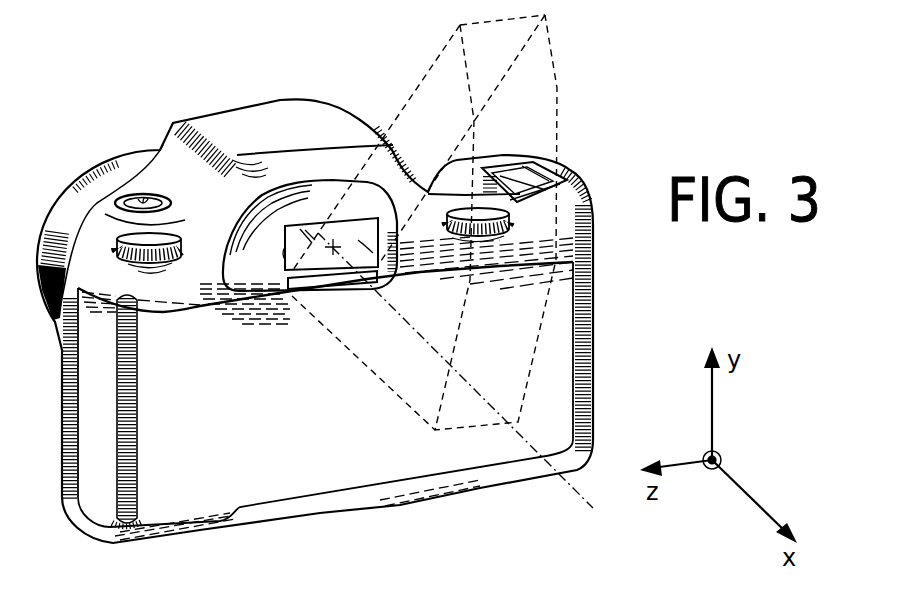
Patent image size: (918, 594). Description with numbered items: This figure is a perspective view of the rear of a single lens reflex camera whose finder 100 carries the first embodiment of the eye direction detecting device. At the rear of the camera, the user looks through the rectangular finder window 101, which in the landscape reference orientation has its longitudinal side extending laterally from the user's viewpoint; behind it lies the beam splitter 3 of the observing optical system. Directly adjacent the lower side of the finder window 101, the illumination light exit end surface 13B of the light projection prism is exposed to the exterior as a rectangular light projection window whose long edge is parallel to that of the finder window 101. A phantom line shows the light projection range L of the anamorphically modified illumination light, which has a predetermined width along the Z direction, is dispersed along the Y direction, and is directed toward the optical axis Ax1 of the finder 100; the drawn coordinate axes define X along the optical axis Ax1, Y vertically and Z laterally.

The beam splitter 3 is at (346, 226).
The illumination light exit end surface 13B is at (277, 258).
The finder 100 is at (315, 321).
The finder window 101 is at (288, 280).
The light projection range L is at (557, 89).
The optical axis Ax1 is at (556, 491).